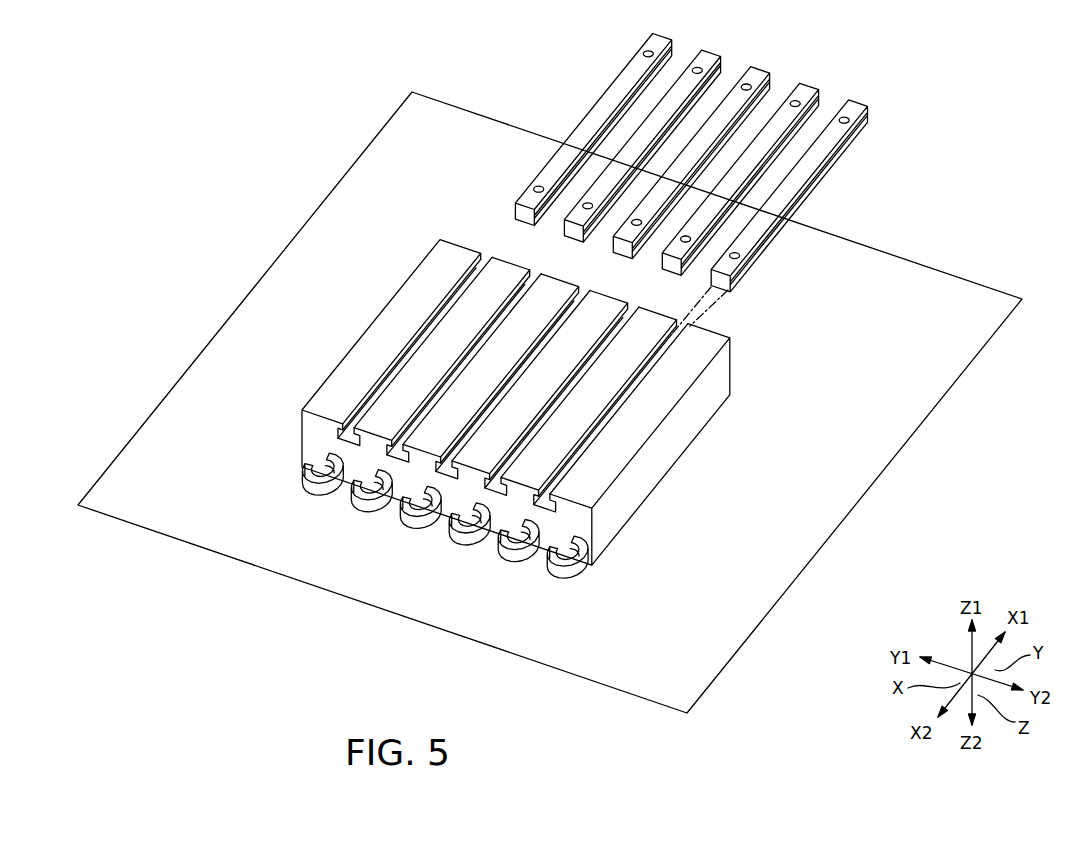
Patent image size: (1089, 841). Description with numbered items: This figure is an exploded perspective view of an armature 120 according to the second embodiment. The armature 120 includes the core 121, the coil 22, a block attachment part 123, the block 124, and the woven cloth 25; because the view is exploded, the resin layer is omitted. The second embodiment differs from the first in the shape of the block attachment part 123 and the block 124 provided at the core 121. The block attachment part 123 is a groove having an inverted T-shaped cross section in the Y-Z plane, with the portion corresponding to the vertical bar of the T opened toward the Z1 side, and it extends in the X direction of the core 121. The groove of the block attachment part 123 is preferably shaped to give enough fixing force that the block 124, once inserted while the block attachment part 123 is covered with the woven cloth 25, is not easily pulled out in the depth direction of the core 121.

The coil 22 is at (560, 574).
The woven cloth 25 is at (967, 297).
The armature 120 is at (930, 152).
The core 121 is at (715, 342).
The block attachment part 123 is at (489, 258).
The block 124 is at (853, 103).